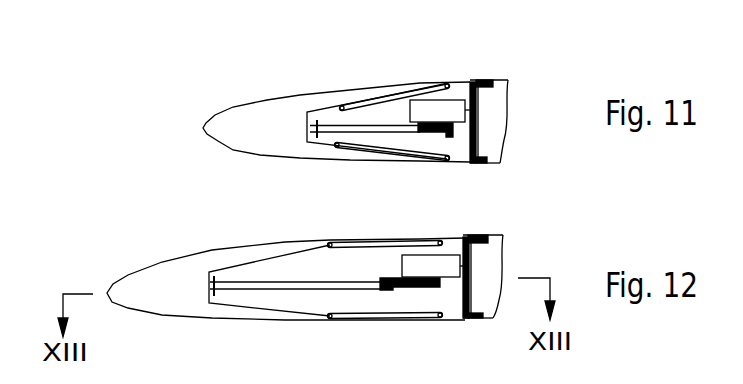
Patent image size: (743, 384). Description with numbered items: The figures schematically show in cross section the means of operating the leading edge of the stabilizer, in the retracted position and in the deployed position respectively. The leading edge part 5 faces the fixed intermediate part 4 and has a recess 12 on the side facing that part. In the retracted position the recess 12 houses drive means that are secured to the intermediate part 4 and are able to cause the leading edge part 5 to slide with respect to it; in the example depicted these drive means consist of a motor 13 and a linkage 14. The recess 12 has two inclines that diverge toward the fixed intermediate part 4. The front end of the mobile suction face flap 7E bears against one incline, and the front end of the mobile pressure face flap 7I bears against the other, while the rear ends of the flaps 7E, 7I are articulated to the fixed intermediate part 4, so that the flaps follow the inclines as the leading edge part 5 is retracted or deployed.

In FIG. 11, the intermediate part 4 is at (497, 103).
In FIG. 12, the intermediate part 4 is at (493, 252).
In FIG. 11, the leading edge part 5 is at (258, 125).
In FIG. 12, the leading edge part 5 is at (167, 282).
In FIG. 11, the mobile suction face flap 7E is at (395, 95).
In FIG. 12, the mobile suction face flap 7E is at (387, 244).
In FIG. 11, the mobile pressure face flap 7I is at (412, 154).
In FIG. 12, the mobile pressure face flap 7I is at (393, 318).
In FIG. 11, the recess 12 is at (363, 118).
In FIG. 12, the recess 12 is at (293, 265).
In FIG. 11, the motor 13 is at (437, 108).
In FIG. 12, the motor 13 is at (445, 268).
In FIG. 11, the linkage 14 is at (363, 128).
In FIG. 12, the linkage 14 is at (320, 289).